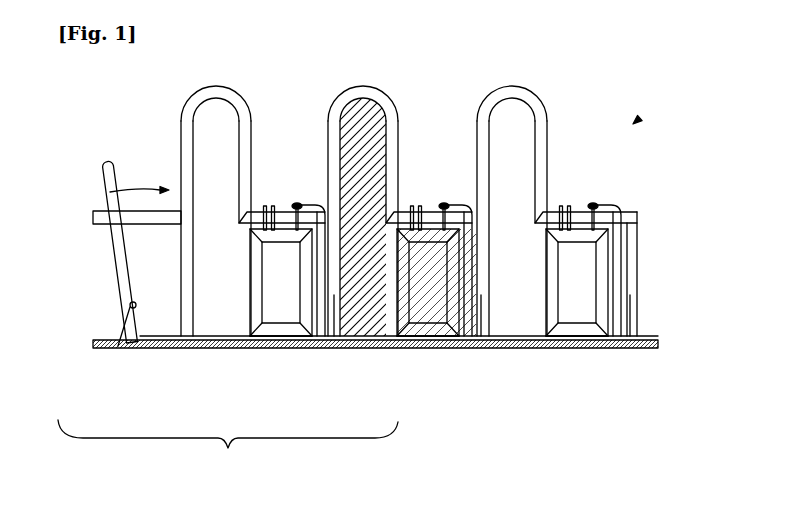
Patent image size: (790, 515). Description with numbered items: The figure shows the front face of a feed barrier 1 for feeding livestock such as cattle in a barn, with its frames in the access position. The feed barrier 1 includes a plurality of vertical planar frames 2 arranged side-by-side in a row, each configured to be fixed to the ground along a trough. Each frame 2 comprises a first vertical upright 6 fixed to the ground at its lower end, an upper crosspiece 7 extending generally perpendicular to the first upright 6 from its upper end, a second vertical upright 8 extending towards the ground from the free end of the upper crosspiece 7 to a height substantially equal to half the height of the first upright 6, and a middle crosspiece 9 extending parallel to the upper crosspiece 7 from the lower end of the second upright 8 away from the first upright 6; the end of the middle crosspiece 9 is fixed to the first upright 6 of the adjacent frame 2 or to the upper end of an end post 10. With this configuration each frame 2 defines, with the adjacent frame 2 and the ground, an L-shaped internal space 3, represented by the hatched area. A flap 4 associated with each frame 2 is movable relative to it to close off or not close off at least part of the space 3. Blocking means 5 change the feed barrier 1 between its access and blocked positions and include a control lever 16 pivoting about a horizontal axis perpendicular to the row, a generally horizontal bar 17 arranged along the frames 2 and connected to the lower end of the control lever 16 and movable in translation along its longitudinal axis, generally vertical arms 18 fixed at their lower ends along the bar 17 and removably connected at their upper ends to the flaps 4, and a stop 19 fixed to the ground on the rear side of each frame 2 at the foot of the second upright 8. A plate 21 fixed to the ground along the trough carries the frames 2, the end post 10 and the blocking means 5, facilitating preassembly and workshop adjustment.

The feed barrier 1 is at (637, 121).
The frame 2 is at (363, 187).
The L-shaped internal space 3 is at (202, 180).
The flap 4 is at (284, 334).
The blocking means 5 is at (228, 450).
The first vertical upright 6 is at (188, 133).
The upper crosspiece 7 is at (207, 97).
The second vertical upright 8 is at (245, 143).
The middle crosspiece 9 is at (256, 210).
The end post 10 is at (636, 248).
The control lever 16 is at (127, 288).
The horizontal bar 17 is at (192, 340).
The vertical arm 18 is at (327, 287).
The stop 19 is at (245, 340).
The plate 21 is at (102, 342).